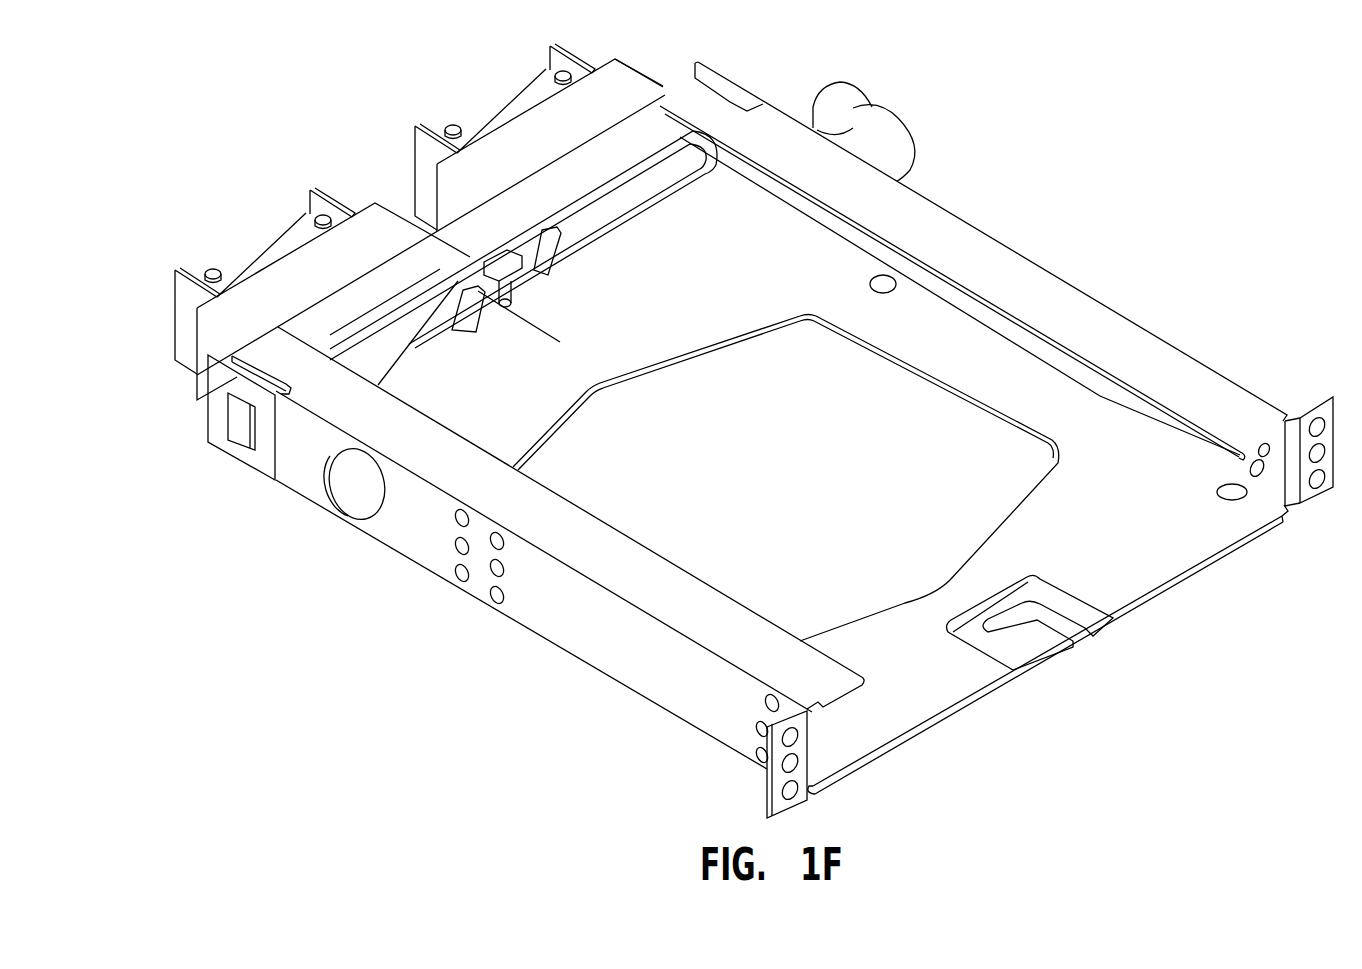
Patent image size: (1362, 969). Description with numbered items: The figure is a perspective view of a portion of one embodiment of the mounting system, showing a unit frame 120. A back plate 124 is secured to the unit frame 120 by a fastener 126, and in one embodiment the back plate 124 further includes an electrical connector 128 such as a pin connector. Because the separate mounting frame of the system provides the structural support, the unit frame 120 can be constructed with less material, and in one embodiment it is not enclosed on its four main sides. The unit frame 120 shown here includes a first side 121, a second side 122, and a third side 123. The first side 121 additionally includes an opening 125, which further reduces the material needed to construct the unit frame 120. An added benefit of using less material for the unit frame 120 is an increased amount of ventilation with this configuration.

The unit frame 120 is at (1160, 570).
The first side 121 is at (1038, 398).
The second side 122 is at (1033, 255).
The third side 123 is at (537, 620).
The back plate 124 is at (705, 98).
The opening 125 is at (735, 375).
The fastener 126 is at (242, 430).
The electrical connector 128 is at (630, 76).